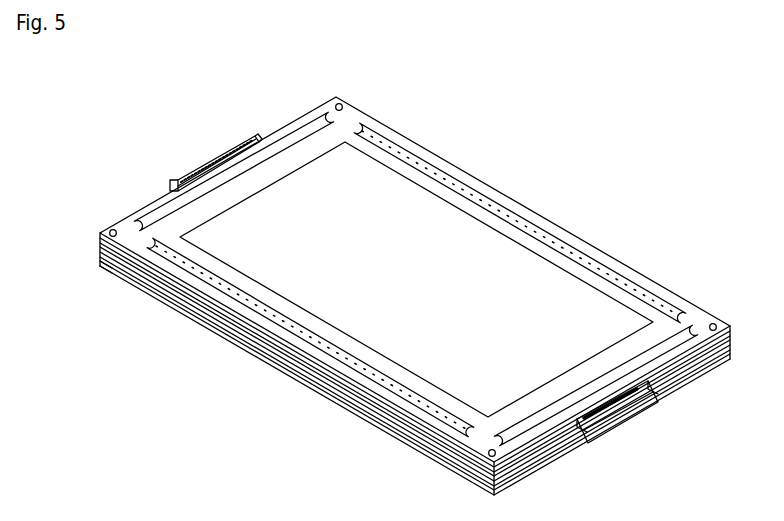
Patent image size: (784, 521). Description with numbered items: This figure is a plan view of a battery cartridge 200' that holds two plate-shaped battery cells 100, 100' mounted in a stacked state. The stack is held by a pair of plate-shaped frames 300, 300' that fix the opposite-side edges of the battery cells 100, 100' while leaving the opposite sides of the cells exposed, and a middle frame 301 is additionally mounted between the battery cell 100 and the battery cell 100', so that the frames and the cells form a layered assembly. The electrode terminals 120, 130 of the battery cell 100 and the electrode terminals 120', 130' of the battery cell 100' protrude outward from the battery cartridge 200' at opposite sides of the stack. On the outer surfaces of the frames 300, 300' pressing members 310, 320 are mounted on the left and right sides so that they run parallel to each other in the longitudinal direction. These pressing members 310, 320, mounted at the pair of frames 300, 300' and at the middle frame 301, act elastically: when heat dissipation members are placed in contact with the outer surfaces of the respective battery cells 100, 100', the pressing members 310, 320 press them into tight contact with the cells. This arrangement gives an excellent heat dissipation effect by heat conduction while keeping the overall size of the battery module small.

The battery cartridge 200' is at (380, 281).
The battery cell 100 is at (415, 371).
The battery cell 100' is at (415, 386).
The electrode terminal 120 is at (195, 146).
The electrode terminal 120' is at (171, 158).
The electrode terminal 130 is at (658, 428).
The electrode terminal 130' is at (644, 450).
The frame 300 is at (415, 296).
The frame 300' is at (415, 378).
The middle frame 301 is at (103, 268).
The pressing member 310 is at (413, 168).
The pressing member 320 is at (172, 277).